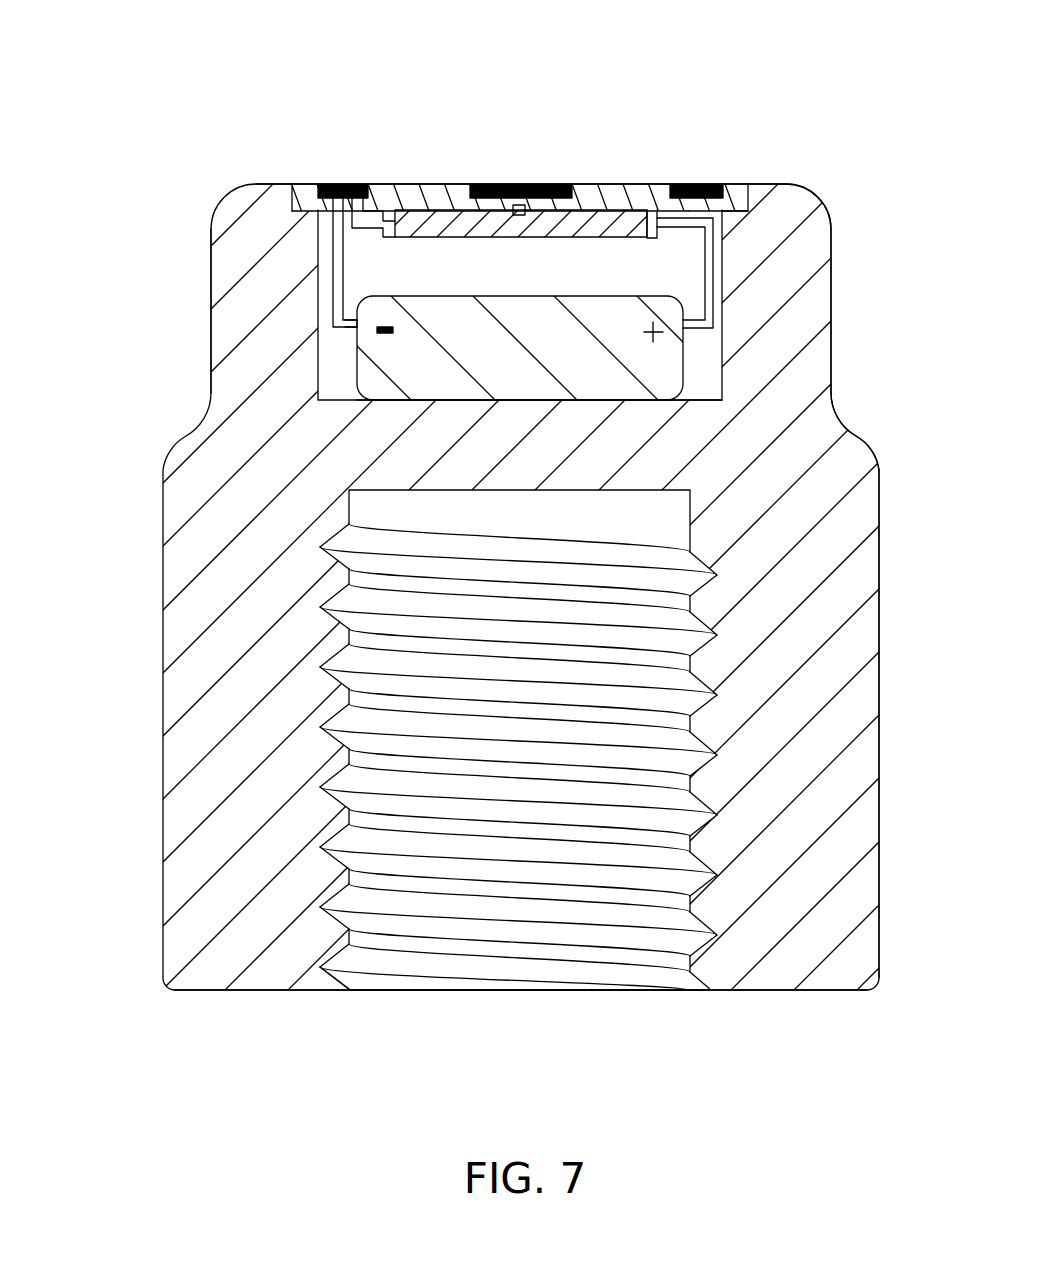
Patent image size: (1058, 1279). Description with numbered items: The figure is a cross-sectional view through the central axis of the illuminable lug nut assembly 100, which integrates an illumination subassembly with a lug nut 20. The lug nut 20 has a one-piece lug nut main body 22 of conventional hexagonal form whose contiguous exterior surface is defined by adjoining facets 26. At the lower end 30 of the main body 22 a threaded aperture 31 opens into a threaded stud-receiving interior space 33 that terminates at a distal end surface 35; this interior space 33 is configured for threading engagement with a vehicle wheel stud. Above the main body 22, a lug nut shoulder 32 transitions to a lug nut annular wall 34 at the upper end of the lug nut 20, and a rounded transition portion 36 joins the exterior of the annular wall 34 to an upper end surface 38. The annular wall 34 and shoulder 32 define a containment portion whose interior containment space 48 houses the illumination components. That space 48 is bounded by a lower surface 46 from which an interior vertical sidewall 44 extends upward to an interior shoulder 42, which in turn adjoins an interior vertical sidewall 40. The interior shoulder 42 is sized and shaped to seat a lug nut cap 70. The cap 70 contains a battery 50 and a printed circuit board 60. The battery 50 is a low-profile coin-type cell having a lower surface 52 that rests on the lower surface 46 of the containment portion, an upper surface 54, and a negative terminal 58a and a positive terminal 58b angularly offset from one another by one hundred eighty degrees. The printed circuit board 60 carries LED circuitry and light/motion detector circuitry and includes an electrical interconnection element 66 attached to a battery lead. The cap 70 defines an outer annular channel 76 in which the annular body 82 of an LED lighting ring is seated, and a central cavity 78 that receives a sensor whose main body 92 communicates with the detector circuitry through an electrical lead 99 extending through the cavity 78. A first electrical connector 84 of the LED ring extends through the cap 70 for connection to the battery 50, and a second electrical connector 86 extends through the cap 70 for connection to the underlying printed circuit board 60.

The lug nut 20 is at (118, 582).
The lug nut main body 22 is at (158, 705).
The lug nut facets 26 is at (880, 678).
The lower end 30 is at (250, 992).
The threaded aperture 31 is at (367, 992).
The lug nut shoulder 32 is at (842, 436).
The threaded stud-receiving interior space 33 is at (486, 525).
The lug nut annular wall 34 is at (210, 362).
The distal end surface 35 is at (573, 490).
The rounded transition portion 36 is at (822, 192).
The upper end surface 38 is at (798, 186).
The interior vertical sidewall 40 is at (740, 185).
The interior shoulder 42 is at (294, 186).
The interior vertical sidewall 44 is at (327, 352).
The lower surface 46 is at (702, 400).
The interior containment space 48 is at (486, 285).
The battery 50 is at (489, 378).
The lower surface 52 is at (602, 402).
The upper surface 54 is at (615, 302).
The negative terminal 58a is at (345, 316).
The positive terminal 58b is at (702, 322).
The printed circuit board 60 is at (615, 200).
The electrical interconnection element 66 is at (660, 238).
The lug nut cap 70 is at (597, 178).
The outer annular channel 76 is at (708, 185).
The central sensor body-receiving cavity 78 is at (498, 186).
The annular body 82 is at (333, 183).
The first electrical connector 84 is at (343, 244).
The second electrical connector 86 is at (365, 230).
The main body 92 is at (542, 185).
The electrical lead 99 is at (520, 214).
The illuminable lug nut assembly 100 is at (363, 88).